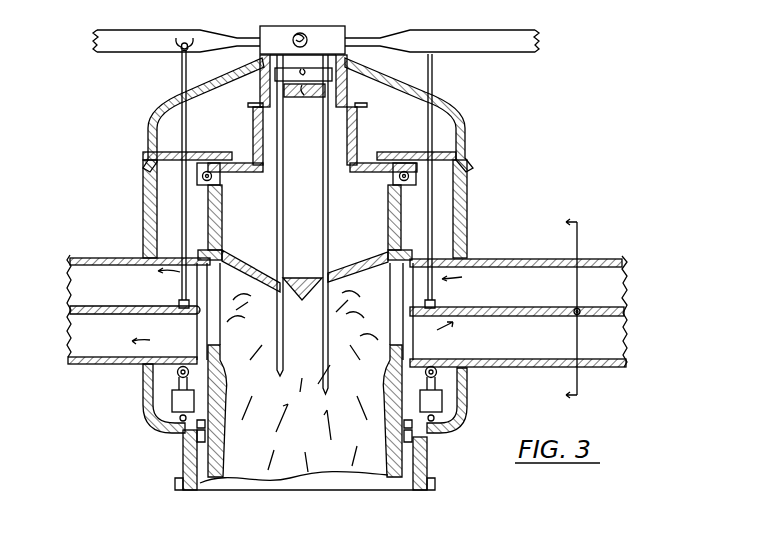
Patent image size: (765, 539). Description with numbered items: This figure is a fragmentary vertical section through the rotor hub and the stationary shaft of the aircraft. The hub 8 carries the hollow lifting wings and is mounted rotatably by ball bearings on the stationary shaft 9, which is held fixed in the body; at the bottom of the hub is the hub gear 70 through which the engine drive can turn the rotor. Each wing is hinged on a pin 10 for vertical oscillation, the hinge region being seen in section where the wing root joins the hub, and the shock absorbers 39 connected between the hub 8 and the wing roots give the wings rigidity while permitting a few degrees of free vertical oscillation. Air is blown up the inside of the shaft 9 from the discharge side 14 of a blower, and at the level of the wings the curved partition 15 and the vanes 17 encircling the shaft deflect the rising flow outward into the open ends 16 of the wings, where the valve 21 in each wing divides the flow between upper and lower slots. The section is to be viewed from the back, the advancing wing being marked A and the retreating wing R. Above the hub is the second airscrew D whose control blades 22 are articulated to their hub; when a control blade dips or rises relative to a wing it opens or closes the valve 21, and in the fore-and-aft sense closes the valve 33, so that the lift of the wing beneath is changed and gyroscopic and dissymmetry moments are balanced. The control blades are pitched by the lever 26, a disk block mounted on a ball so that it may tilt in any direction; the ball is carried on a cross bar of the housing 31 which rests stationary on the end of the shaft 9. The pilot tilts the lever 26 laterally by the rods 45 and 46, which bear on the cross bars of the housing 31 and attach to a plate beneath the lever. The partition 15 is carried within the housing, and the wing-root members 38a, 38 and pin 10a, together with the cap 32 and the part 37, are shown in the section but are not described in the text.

The control blades 22 is at (126, 18).
The airscrew D is at (338, 32).
The valve 33 is at (188, 128).
The disk block (lever) 26 is at (263, 84).
The housing 31 is at (258, 137).
The cap cover 32 is at (430, 127).
The bearing 37 is at (425, 150).
The rod 45 is at (276, 226).
The rod 46 is at (328, 228).
The curved partition 15 is at (339, 263).
The retreating wing R is at (138, 294).
The advancing wing A is at (518, 241).
The upper duct wall 38a is at (597, 278).
The valve 21 is at (110, 302).
The duct 38 is at (607, 352).
The pin 10 is at (561, 308).
The pivot pin 10a is at (581, 312).
The discharge side of the blower 14 is at (219, 294).
The open ends of the wings 16 is at (425, 288).
The stationary shaft 9 is at (224, 461).
The hub 8 is at (143, 410).
The vanes 17 is at (219, 357).
The hub gear 70 is at (437, 486).
The shock absorbers 39 is at (445, 408).